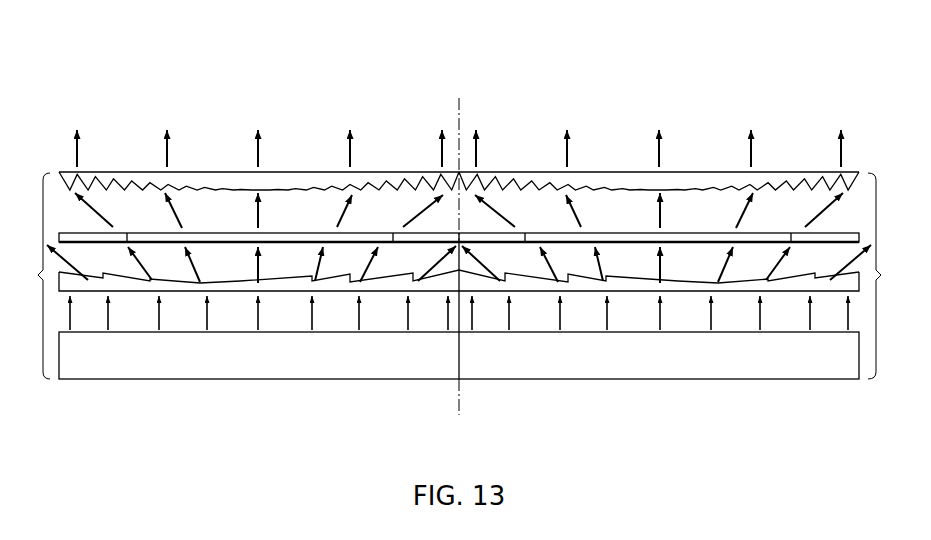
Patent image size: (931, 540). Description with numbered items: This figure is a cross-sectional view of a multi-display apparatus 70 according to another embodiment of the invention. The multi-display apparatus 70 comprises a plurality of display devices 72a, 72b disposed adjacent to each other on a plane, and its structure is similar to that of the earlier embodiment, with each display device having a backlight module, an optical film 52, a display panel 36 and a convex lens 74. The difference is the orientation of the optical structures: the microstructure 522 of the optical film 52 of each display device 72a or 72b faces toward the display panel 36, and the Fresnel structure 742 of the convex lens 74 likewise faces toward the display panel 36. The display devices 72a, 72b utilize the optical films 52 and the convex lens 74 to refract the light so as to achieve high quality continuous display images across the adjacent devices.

The multi-display apparatus 70 is at (50, 61).
The display device 72a is at (29, 276).
The display device 72b is at (890, 276).
The convex lens 74 is at (459, 151).
The Fresnel structure 742 is at (320, 188).
The display panel 36 is at (138, 231).
The optical film 52 is at (459, 350).
The microstructure 522 is at (117, 282).